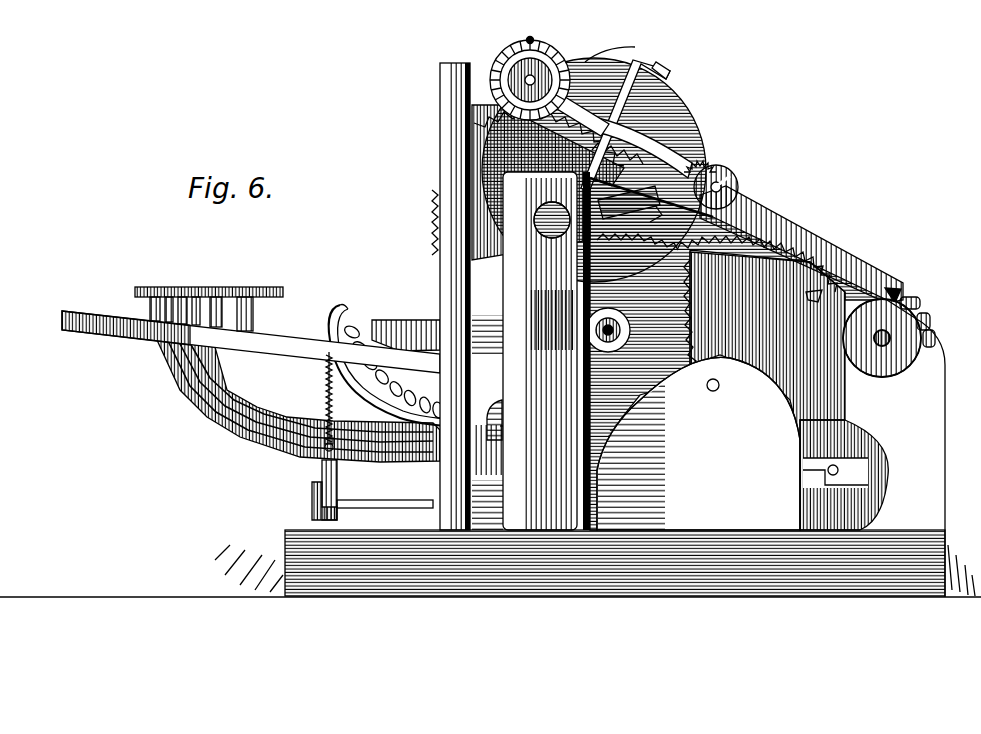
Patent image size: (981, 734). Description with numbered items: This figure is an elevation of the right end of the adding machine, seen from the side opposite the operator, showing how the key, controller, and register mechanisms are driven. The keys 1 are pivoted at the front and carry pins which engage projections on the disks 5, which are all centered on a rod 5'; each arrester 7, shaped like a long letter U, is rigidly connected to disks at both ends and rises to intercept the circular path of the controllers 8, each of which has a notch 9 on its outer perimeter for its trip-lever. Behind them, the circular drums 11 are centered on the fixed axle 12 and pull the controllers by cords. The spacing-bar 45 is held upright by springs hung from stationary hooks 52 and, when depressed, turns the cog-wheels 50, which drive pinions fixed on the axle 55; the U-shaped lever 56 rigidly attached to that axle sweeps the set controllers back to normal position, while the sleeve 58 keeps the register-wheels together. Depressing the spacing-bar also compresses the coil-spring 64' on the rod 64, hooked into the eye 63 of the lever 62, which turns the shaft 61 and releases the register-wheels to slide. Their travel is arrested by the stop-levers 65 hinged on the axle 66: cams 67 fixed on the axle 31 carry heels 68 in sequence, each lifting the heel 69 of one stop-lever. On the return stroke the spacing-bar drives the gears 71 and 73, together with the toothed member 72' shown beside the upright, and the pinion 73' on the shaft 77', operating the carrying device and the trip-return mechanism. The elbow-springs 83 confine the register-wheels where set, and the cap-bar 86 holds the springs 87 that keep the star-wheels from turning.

The keys 1 is at (150, 287).
The disk 5 is at (490, 410).
The rod 5' is at (524, 421).
The arrester 7 is at (347, 323).
The controller 8 is at (676, 103).
The notch 9 is at (707, 166).
The circular drum 11 is at (878, 460).
The fixed axle 12 is at (800, 460).
The axle 31 is at (888, 348).
The spacing-bar 45 is at (251, 342).
The cog-wheel 50 is at (634, 330).
The stationary upright hook 52 is at (453, 112).
The axle 55 is at (540, 351).
The U-shaped lever 56 is at (551, 320).
The sleeve 58 is at (630, 204).
The rod or shaft 61 is at (372, 504).
The lever 62 is at (337, 476).
The eye 63 is at (322, 451).
The rod 64 is at (344, 397).
The coil-spring 64' is at (300, 396).
The stop-lever 65 is at (842, 251).
The axle 66 is at (725, 176).
The cam 67 is at (882, 338).
The heel or projection 68 is at (915, 300).
The heel 69 is at (897, 284).
The gear 71 is at (813, 300).
The toothed segment 72' is at (433, 201).
The wheel 73 is at (761, 338).
The pinion 73' is at (516, 77).
The shaft 77' is at (574, 76).
The elbow-spring 83 is at (646, 152).
The cap-bar 86 is at (663, 66).
The spring 87 is at (618, 48).